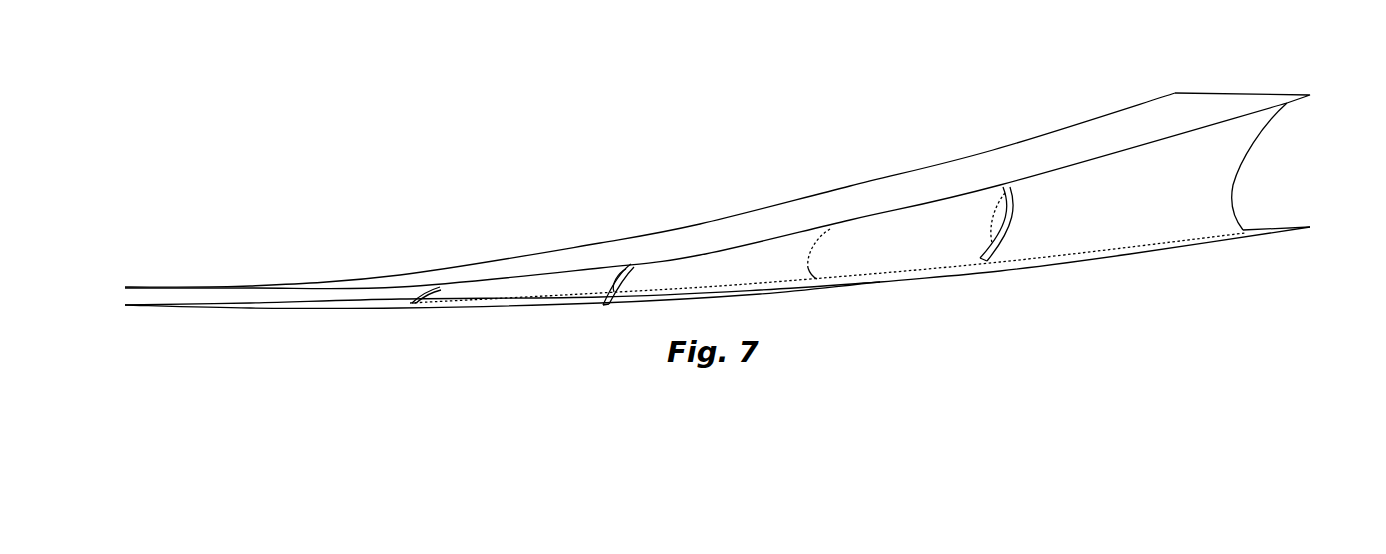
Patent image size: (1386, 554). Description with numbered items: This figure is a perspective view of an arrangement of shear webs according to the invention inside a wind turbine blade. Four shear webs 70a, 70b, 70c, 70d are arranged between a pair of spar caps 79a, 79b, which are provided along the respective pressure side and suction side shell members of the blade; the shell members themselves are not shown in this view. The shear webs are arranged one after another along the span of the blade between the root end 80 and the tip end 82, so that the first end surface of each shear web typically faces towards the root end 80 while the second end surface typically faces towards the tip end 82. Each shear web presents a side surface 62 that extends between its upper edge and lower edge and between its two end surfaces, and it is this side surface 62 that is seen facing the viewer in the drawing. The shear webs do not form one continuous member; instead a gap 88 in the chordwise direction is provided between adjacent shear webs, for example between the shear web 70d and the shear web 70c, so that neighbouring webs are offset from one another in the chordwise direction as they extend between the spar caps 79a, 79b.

The side surface of shear web 62 is at (1159, 200).
The shear web 70a is at (1123, 220).
The shear web 70b is at (915, 247).
The shear web 70c is at (772, 261).
The shear web 70d is at (503, 290).
The spar cap 79a is at (1278, 232).
The spar cap 79b is at (1073, 147).
The root end 80 is at (1303, 167).
The tip end 82 is at (125, 258).
The gap 88 is at (612, 286).